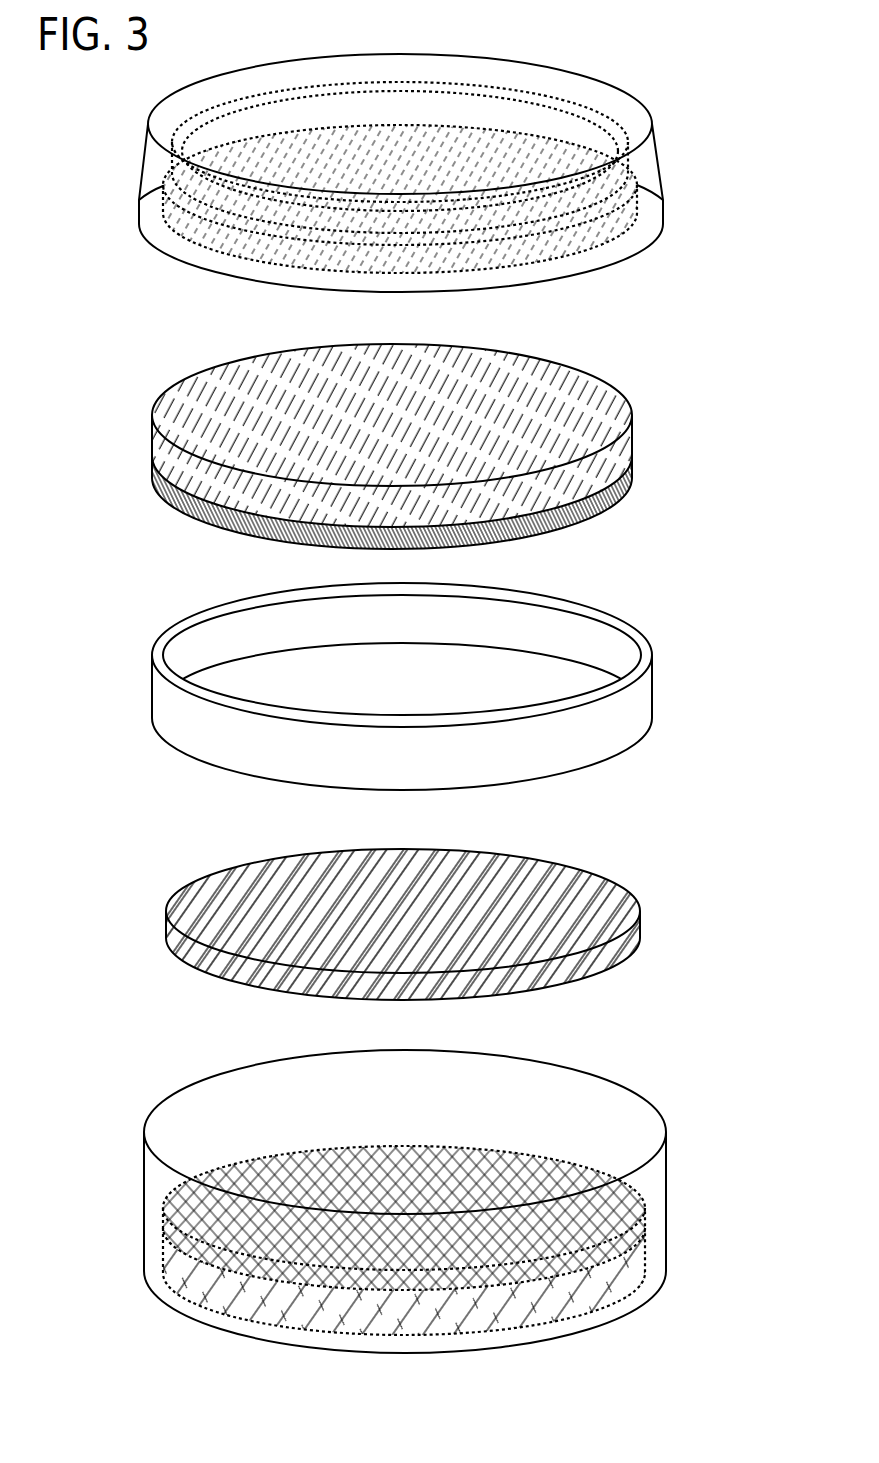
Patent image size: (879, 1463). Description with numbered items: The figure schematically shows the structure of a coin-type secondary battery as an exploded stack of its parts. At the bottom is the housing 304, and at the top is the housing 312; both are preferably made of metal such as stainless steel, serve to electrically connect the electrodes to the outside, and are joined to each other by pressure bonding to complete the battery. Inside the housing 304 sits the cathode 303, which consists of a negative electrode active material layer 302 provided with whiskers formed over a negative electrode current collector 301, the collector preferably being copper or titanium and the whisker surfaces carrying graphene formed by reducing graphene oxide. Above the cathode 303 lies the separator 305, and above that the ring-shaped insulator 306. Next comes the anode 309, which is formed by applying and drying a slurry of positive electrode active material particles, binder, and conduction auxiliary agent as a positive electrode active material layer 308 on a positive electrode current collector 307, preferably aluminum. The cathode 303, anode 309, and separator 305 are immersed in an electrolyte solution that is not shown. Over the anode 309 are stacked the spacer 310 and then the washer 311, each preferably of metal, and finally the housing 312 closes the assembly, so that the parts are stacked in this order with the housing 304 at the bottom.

The negative electrode current collector 301 is at (666, 1285).
The negative electrode active material layer 302 is at (666, 1250).
The cathode 303 is at (484, 1242).
The housing 304 is at (476, 1201).
The separator 305 is at (167, 938).
The ring-shaped insulator 306 is at (653, 692).
The positive electrode current collector 307 is at (632, 497).
The positive electrode active material layer 308 is at (632, 450).
The anode 309 is at (476, 447).
The spacer 310 is at (190, 243).
The washer 311 is at (177, 167).
The housing 312 is at (428, 173).